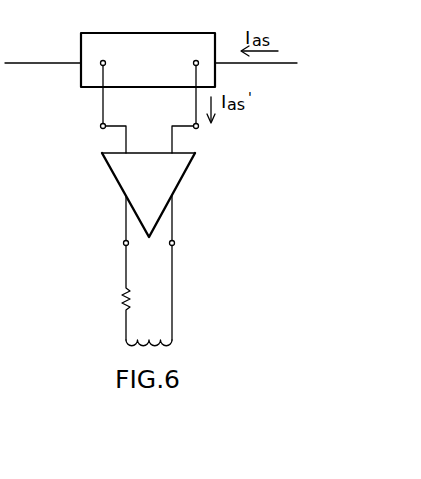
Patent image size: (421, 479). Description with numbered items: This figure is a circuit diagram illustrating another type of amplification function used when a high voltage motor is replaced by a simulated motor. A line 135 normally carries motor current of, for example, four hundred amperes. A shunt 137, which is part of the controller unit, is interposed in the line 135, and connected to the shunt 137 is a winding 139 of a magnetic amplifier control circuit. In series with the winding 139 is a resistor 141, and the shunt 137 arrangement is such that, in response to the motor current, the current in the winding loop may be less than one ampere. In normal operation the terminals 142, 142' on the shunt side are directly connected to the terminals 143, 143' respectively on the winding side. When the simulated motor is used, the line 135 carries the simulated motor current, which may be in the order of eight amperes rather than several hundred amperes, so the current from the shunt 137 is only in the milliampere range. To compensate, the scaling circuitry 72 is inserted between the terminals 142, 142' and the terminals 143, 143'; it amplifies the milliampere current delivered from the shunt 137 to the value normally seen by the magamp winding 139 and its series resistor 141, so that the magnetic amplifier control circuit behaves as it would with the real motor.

The line 135 is at (262, 64).
The shunt 137 is at (115, 33).
The terminal 142 is at (90, 110).
The terminal 142' is at (209, 110).
The scaling circuitry 72 is at (188, 172).
The terminal 143 is at (104, 225).
The terminal 143' is at (199, 267).
The resistor 141 is at (122, 297).
The winding 139 is at (156, 342).